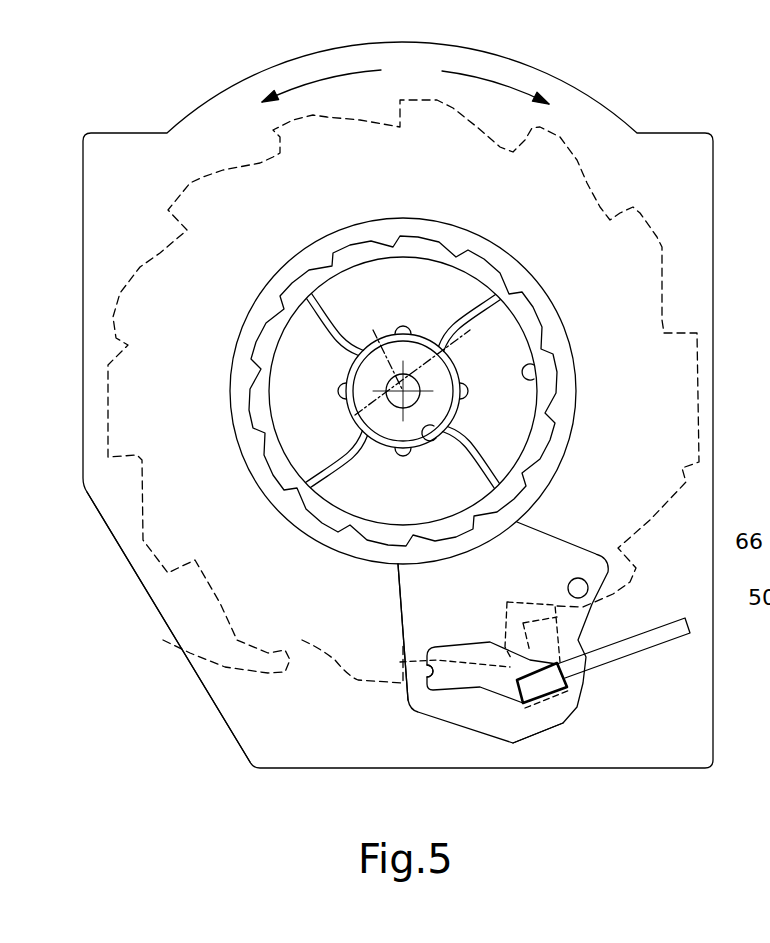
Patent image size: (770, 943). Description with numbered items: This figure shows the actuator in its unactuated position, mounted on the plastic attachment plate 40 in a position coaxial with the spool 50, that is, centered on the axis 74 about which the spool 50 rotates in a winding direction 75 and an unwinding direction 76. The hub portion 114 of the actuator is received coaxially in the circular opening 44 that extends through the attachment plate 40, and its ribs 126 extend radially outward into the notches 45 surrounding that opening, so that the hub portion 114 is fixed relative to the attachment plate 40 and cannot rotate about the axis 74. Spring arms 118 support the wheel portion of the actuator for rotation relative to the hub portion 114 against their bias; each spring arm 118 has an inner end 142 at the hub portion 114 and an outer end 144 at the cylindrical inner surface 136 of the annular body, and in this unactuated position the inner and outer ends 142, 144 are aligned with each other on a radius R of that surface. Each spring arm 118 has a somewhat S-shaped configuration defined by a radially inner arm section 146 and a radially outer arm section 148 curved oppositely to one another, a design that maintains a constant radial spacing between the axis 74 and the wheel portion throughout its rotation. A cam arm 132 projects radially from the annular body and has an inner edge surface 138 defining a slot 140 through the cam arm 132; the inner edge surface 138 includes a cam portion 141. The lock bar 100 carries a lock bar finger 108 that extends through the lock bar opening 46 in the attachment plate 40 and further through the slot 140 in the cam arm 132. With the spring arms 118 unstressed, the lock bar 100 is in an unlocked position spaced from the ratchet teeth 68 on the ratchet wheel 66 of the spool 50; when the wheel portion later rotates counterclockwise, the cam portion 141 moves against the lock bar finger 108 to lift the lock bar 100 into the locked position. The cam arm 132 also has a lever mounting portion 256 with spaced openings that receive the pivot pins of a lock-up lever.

The attachment plate 40 is at (543, 66).
The circular opening 44 is at (428, 436).
The notches 45 is at (400, 452).
The lock bar opening 46 is at (487, 651).
The spool 50 is at (130, 552).
The ratchet wheel 66 is at (167, 515).
The ratchet teeth 68 is at (267, 655).
The axis 74 is at (352, 410).
The winding direction 75 is at (480, 77).
The unwinding direction 76 is at (305, 80).
The lock bar 100 is at (641, 678).
The lock bar finger 108 is at (540, 688).
The hub portion 114 is at (462, 418).
The spring arms 118 is at (348, 318).
The ribs 126 is at (338, 392).
The cam arm 132 is at (406, 640).
The cylindrical inner surface 136 is at (540, 366).
The inner edge surface 138 is at (420, 663).
The slot 140 is at (448, 692).
The cam portion 141 is at (505, 705).
The inner end 142 is at (442, 346).
The outer end 144 is at (493, 303).
The radially inner arm section 146 is at (453, 323).
The radially outer arm section 148 is at (487, 313).
The lever mounting portion 256 is at (583, 562).
The radius R is at (380, 351).